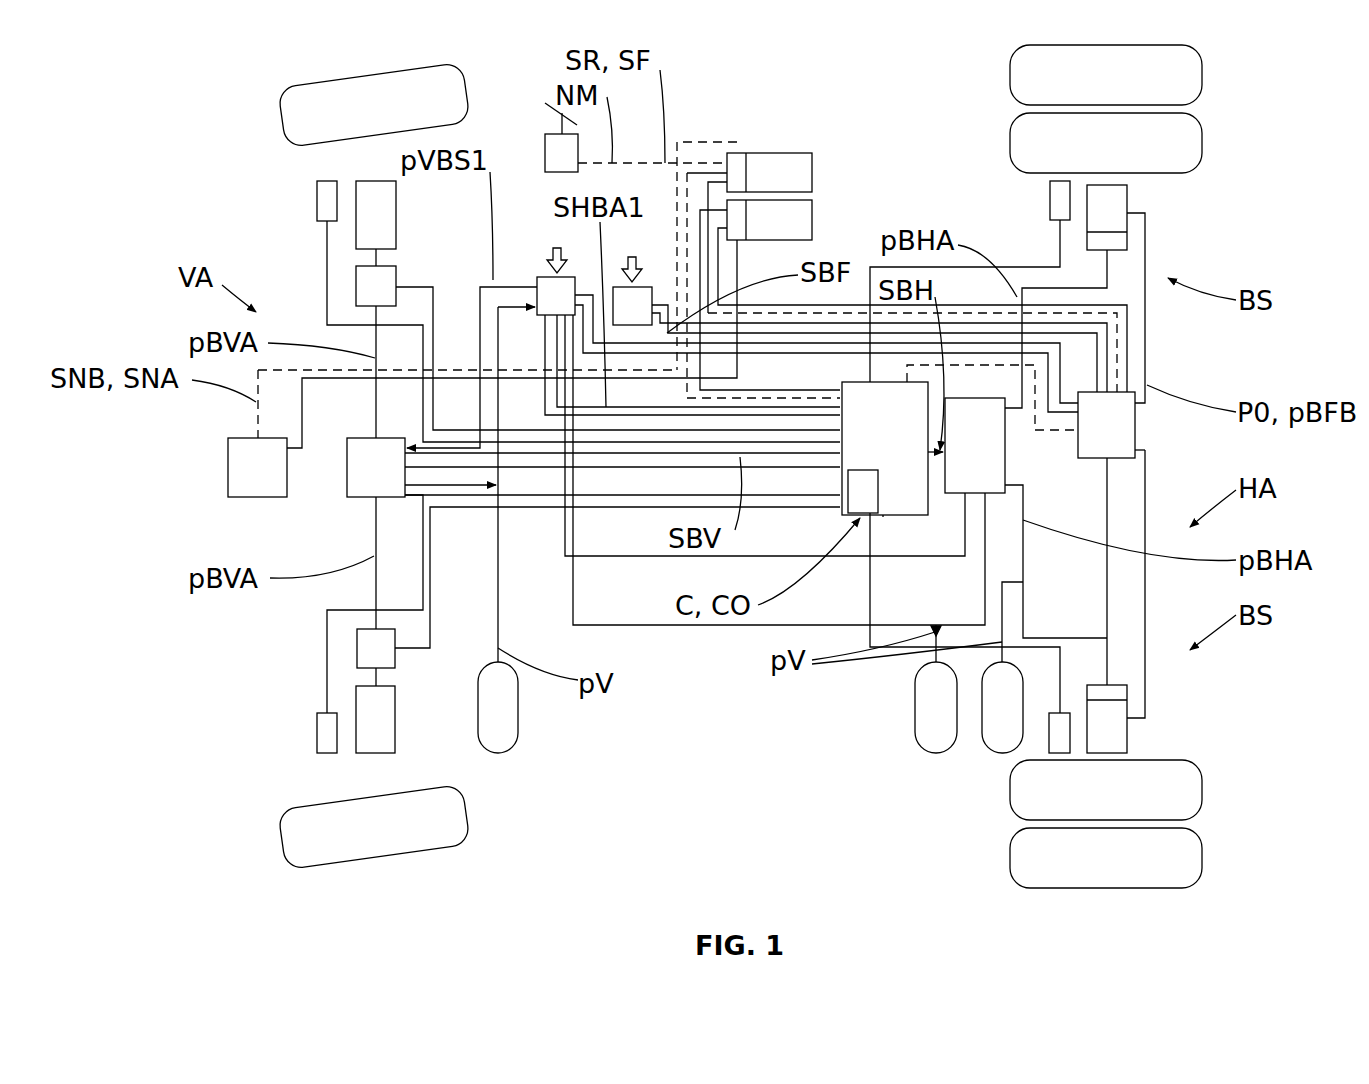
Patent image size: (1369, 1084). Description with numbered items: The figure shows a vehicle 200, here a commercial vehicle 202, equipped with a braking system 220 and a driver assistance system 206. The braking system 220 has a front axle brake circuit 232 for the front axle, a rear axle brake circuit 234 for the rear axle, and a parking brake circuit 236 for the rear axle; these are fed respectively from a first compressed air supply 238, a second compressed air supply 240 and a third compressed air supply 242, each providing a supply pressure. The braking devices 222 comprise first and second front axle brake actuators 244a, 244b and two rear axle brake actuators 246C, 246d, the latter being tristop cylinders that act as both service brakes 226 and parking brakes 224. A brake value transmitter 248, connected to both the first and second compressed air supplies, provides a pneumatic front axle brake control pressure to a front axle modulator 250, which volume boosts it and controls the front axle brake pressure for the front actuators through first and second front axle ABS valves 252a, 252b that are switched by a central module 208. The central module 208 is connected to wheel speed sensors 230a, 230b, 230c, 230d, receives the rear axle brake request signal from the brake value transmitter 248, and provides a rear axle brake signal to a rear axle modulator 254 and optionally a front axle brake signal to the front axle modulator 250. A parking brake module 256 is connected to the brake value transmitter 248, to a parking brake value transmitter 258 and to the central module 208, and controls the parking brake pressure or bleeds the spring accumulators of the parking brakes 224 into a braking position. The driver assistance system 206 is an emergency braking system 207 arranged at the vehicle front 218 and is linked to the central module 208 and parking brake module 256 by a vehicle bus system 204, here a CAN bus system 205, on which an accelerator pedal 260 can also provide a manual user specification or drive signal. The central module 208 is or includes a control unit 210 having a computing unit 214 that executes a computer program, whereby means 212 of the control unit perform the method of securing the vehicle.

The vehicle 200 is at (252, 810).
The commercial vehicle 202 is at (206, 750).
The vehicle bus system 204 is at (902, 221).
The CAN bus system 205 is at (715, 142).
The driver assistance system 206 is at (391, 391).
The emergency braking system 207 is at (228, 472).
The central module 208 is at (892, 448).
The control unit 210 is at (912, 427).
The means 212 is at (848, 535).
The computing unit 214 is at (883, 517).
The vehicle front 218 is at (391, 391).
The braking system 220 is at (700, 760).
The braking devices 222 is at (425, 234).
The parking brakes 224 is at (1128, 200).
The service brakes 226 is at (1128, 240).
The wheel speed sensor 230a is at (318, 730).
The wheel speed sensor 230b is at (318, 200).
The wheel speed sensor 230c is at (1049, 745).
The wheel speed sensor 230d is at (1050, 200).
The front axle brake circuit 232 is at (226, 604).
The rear axle brake circuit 234 is at (950, 222).
The parking brake circuit 236 is at (1188, 370).
The first compressed air supply 238 is at (498, 753).
The second compressed air supply 240 is at (915, 715).
The third compressed air supply 242 is at (985, 745).
The first front axle brake actuator 244a is at (397, 722).
The second front axle brake actuator 244b is at (396, 205).
The rear axle brake actuator 246C is at (1170, 745).
The rear axle brake actuator 246d is at (1168, 195).
The brake value transmitter 248 is at (541, 277).
The front axle modulator 250 is at (347, 482).
The first front axle ABS valve 252a is at (357, 648).
The second front axle ABS valve 252b is at (356, 290).
The rear axle modulator 254 is at (1000, 463).
The parking brake module 256 is at (1132, 442).
The parking brake value transmitter 258 is at (652, 287).
The accelerator pedal 260 is at (545, 140).